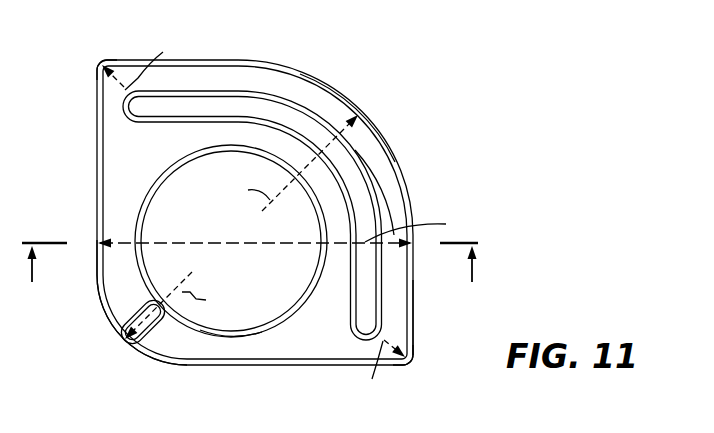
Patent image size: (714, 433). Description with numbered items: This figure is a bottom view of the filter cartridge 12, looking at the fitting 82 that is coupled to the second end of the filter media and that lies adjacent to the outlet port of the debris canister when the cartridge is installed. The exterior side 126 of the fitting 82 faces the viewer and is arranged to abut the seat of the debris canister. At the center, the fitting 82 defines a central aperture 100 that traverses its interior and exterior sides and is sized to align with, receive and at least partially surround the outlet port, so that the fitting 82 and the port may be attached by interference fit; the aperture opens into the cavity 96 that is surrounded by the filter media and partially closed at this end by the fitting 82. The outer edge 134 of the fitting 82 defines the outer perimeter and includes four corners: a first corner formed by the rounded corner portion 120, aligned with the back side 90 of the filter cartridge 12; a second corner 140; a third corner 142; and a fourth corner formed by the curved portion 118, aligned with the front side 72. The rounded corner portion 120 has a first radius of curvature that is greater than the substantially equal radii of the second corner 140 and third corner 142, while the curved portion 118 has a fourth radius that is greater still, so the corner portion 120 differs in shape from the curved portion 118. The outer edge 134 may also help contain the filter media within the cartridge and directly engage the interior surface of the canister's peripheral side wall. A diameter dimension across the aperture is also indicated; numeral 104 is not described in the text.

The filter cartridge 12 is at (380, 90).
The front side 72 is at (396, 163).
The fitting 82 is at (244, 78).
The back side 90 is at (101, 298).
The cavity 96 is at (163, 217).
The central aperture 100 is at (167, 168).
The aperture chamfer 104 is at (247, 290).
The curved portion 118 is at (375, 126).
The rounded corner portion 120 is at (130, 343).
The exterior side 126 is at (389, 200).
The outer edge 134 is at (415, 343).
The second corner 140 is at (99, 64).
The third corner 142 is at (412, 363).